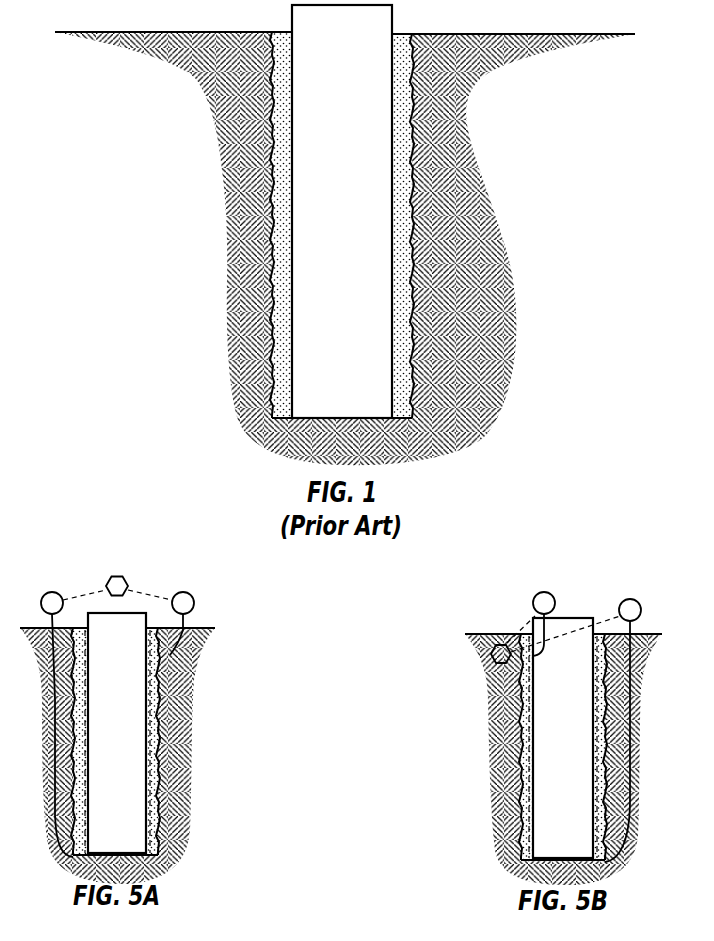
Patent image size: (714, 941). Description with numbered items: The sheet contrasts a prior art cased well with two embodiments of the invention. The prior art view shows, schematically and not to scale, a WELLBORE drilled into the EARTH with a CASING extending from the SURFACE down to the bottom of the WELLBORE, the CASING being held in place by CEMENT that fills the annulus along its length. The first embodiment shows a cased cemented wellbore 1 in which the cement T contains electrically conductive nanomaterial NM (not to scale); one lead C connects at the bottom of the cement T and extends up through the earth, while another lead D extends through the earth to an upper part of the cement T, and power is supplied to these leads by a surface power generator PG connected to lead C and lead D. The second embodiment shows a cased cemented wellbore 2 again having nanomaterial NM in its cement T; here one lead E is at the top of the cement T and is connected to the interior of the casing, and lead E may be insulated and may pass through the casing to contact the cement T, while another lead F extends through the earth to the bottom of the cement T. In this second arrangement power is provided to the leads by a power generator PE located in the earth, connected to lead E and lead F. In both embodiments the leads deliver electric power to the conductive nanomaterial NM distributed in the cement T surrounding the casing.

In FIG. 1, the earth surface SURFACE is at (177, 31).
In FIG. 1, the wellbore WELLBORE is at (292, 114).
In FIG. 1, the casing CASING is at (392, 102).
In FIG. 1, the earth EARTH is at (500, 310).
In FIG. 1, the cement CEMENT is at (282, 323).
In FIG. 5A, the surface power generator PG is at (116, 576).
In FIG. 5A, the lead C is at (57, 697).
In FIG. 5A, the lead D is at (182, 596).
In FIG. 5A, the cement T is at (167, 688).
In FIG. 5B, the cement T is at (520, 784).
In FIG. 5A, the cased cemented wellbore 1 is at (167, 712).
In FIG. 5A, the electrically conductive nanomaterial NM is at (85, 800).
In FIG. 5B, the electrically conductive nanomaterial NM is at (520, 843).
In FIG. 5B, the lead E is at (543, 601).
In FIG. 5B, the lead F is at (623, 709).
In FIG. 5B, the power generator in the earth PE is at (492, 657).
In FIG. 5B, the cased cemented wellbore 2 is at (520, 733).